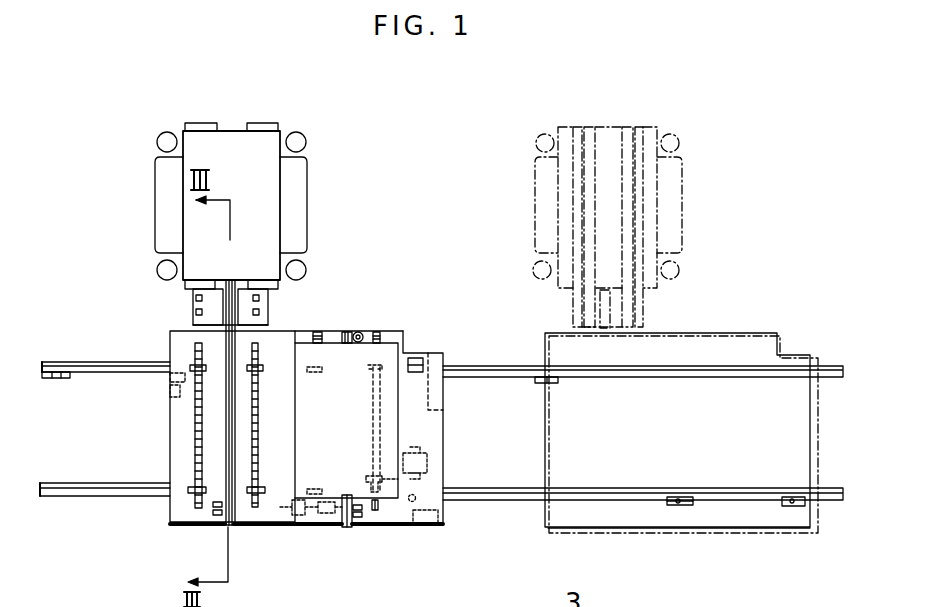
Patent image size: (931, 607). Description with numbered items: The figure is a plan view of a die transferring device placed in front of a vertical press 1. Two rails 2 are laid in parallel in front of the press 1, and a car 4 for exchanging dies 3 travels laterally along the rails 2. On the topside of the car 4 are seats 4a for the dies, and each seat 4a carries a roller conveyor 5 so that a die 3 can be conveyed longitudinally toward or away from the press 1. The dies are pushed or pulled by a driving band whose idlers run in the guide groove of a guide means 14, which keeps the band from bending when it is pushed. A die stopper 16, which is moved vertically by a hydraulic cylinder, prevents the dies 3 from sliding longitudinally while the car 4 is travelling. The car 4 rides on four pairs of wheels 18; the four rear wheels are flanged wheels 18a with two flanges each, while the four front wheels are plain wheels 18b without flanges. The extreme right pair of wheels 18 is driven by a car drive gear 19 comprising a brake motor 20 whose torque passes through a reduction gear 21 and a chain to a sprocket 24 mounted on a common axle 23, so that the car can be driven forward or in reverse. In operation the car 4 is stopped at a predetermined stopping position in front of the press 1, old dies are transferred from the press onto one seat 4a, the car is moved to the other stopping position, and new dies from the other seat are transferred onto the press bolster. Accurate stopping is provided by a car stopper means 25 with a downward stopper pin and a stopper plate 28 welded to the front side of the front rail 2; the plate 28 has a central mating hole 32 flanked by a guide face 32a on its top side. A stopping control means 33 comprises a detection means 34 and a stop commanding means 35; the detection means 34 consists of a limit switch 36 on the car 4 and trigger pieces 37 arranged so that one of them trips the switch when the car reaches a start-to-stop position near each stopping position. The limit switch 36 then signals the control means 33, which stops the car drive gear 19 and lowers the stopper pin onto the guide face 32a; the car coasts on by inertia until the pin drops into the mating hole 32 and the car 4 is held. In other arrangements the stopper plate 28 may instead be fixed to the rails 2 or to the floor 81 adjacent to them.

The vertical press 1 is at (271, 118).
The rails 2 is at (472, 370).
The dies 3 is at (408, 336).
The car 4 is at (318, 332).
The seat 4a is at (212, 353).
The roller conveyor 5 is at (194, 463).
The guide means 14 is at (228, 472).
The die stopper 16 is at (260, 330).
The wheels 18 is at (342, 408).
The flanged wheels 18a is at (358, 334).
The plain wheels 18b is at (362, 526).
The car drive gear 19 is at (475, 451).
The brake motor 20 is at (446, 418).
The reduction gear 21 is at (446, 450).
The common axle 23 is at (373, 412).
The sprocket 24 is at (370, 475).
The car stopper means 25 is at (408, 503).
The stopper plate 28 is at (674, 496).
The mating hole 32 is at (678, 506).
The guide face 32a is at (689, 506).
The stopping control means 33 is at (287, 482).
The detection means 34 is at (96, 380).
The stop commanding means 35 is at (436, 526).
The limit switch 36 is at (166, 395).
The trigger pieces 37 is at (62, 372).
The floor 81 is at (282, 528).